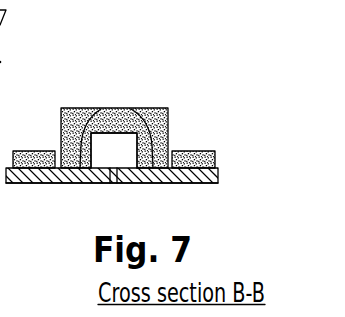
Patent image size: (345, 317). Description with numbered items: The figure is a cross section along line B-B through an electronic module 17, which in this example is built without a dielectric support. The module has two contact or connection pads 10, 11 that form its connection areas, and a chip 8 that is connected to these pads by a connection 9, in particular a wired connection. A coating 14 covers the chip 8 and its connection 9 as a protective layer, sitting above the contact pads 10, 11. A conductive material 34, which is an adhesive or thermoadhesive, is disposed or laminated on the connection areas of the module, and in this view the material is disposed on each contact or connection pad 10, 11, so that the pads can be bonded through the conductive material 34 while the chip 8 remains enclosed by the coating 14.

The chip 8 is at (125, 147).
The connection 9 is at (81, 107).
The contact or connection pad 10 is at (172, 183).
The contact or connection pad 11 is at (90, 183).
The coating 14 is at (151, 108).
The electronic module 17 is at (128, 144).
The conductive material 34 is at (33, 152).